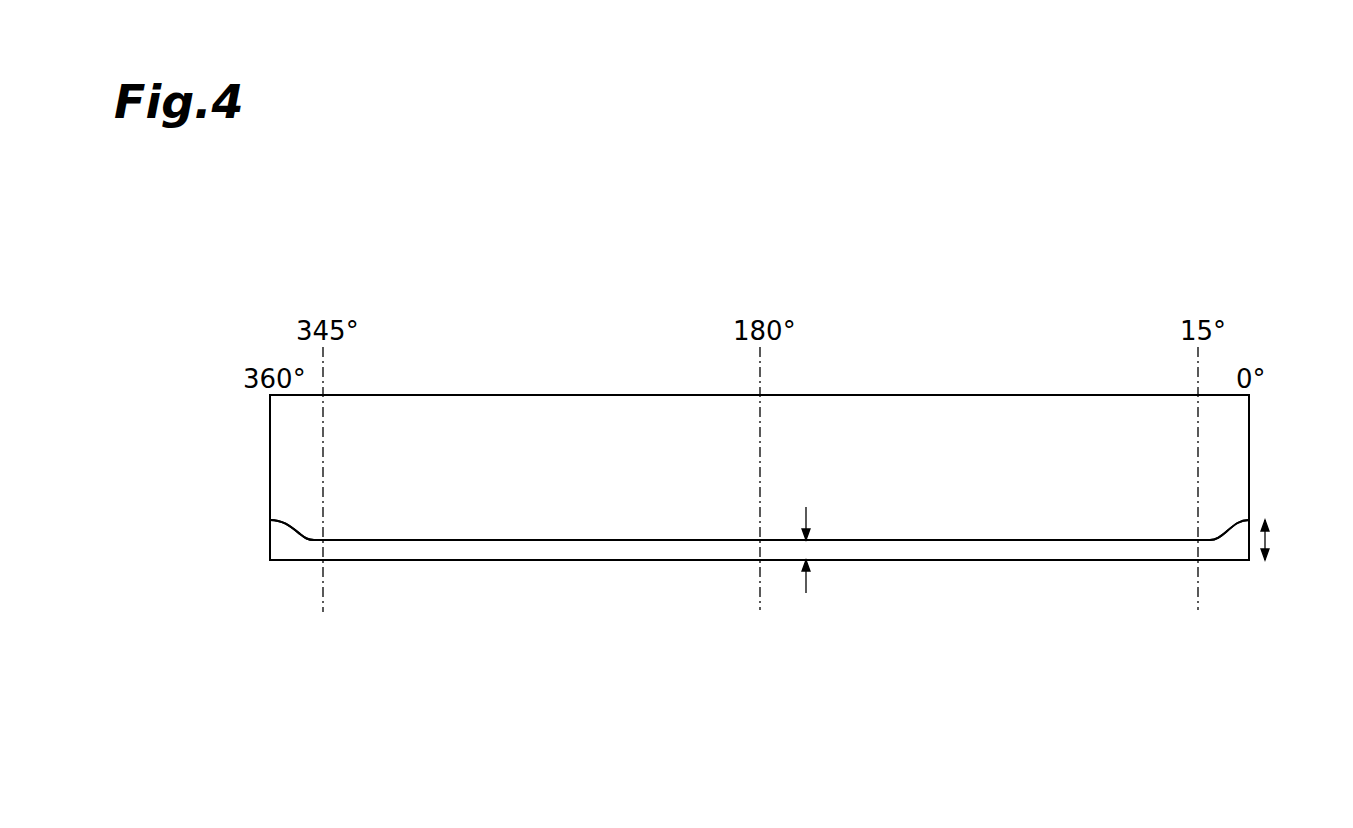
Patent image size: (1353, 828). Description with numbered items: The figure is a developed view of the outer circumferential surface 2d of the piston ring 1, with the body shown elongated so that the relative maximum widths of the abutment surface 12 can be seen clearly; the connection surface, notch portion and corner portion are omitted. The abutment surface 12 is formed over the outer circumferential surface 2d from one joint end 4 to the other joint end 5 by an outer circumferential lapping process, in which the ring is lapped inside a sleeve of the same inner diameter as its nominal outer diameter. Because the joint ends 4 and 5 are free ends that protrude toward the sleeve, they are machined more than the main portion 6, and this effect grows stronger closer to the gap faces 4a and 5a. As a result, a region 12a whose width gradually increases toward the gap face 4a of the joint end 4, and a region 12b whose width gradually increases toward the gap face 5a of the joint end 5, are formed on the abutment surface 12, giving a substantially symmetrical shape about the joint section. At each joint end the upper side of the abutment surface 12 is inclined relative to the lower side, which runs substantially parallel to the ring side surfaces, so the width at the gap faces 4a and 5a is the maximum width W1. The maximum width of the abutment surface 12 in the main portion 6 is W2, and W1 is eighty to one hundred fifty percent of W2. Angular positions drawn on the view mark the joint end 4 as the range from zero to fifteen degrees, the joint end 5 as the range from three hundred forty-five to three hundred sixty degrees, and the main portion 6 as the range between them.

The piston ring 1 is at (1083, 318).
The outer circumferential surface 2d is at (959, 425).
The joint end 4 is at (1224, 412).
The gap face 4a is at (1249, 457).
The joint end 5 is at (304, 412).
The gap face 5a is at (270, 456).
The main portion 6 is at (571, 414).
The abutment surface 12 is at (568, 561).
The region 12a is at (1249, 520).
The region 12b is at (272, 520).
The maximum width W1 is at (1288, 540).
The maximum width W2 is at (806, 550).